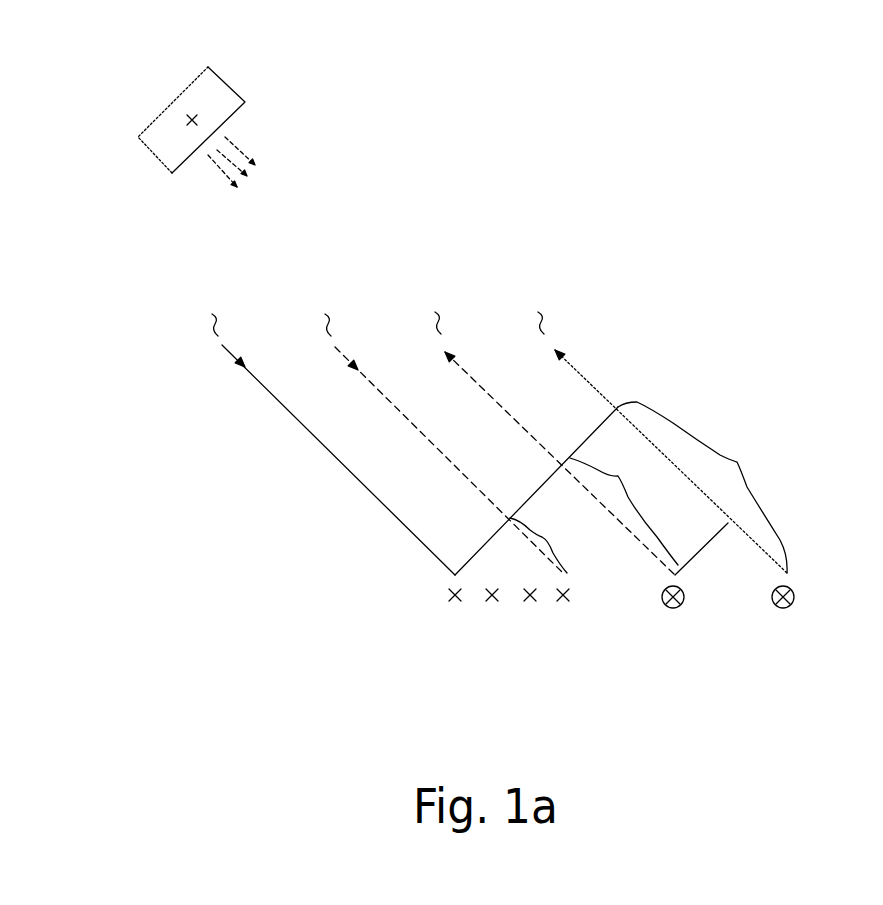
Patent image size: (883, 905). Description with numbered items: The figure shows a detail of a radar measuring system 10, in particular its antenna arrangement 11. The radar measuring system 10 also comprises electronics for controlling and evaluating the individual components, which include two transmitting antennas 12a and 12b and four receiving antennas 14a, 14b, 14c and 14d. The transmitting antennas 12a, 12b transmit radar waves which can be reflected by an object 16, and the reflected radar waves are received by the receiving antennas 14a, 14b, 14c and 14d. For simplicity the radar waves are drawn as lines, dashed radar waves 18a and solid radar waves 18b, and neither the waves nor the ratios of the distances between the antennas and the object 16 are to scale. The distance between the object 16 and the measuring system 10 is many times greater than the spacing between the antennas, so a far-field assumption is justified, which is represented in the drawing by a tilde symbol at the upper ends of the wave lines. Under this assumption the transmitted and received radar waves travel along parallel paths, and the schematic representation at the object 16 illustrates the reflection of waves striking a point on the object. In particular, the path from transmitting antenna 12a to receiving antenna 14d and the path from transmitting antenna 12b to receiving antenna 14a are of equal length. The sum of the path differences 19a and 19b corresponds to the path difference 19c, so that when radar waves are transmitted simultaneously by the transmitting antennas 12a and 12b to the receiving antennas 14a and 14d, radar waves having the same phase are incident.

The radar measuring system 10 is at (812, 508).
The antenna arrangement 11 is at (287, 547).
The transmitting antenna 12a is at (675, 610).
The transmitting antenna 12b is at (782, 610).
The receiving antenna 14a is at (452, 606).
The receiving antenna 14b is at (490, 606).
The receiving antenna 14c is at (530, 606).
The receiving antenna 14d is at (563, 606).
The object 16 is at (180, 95).
The radar waves (dashed) 18a is at (500, 400).
The radar waves (solid) 18b is at (570, 360).
The path difference 19a is at (551, 543).
The path difference 19b is at (624, 509).
The path difference 19c is at (702, 487).